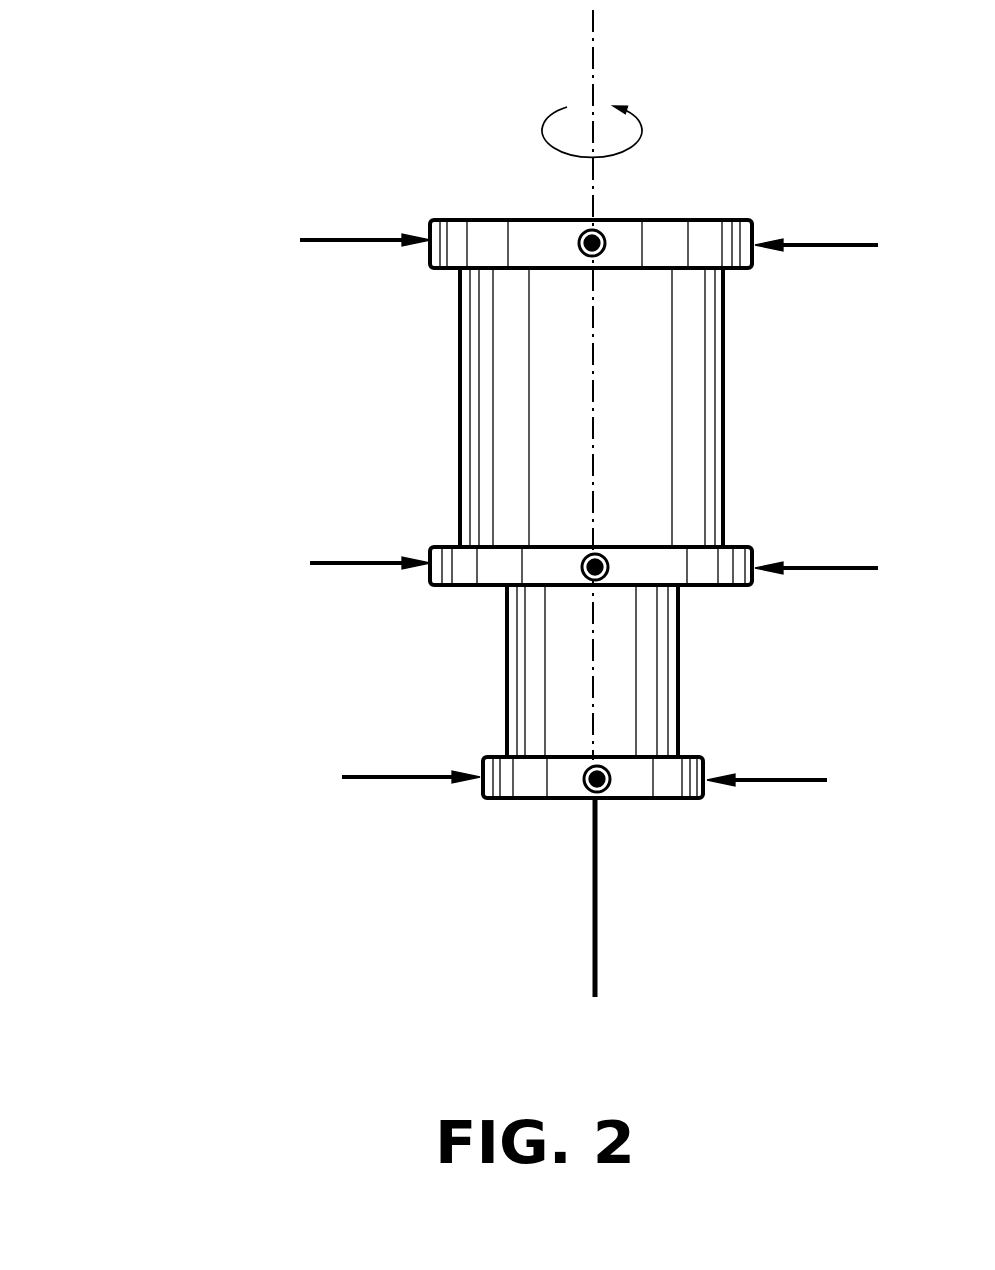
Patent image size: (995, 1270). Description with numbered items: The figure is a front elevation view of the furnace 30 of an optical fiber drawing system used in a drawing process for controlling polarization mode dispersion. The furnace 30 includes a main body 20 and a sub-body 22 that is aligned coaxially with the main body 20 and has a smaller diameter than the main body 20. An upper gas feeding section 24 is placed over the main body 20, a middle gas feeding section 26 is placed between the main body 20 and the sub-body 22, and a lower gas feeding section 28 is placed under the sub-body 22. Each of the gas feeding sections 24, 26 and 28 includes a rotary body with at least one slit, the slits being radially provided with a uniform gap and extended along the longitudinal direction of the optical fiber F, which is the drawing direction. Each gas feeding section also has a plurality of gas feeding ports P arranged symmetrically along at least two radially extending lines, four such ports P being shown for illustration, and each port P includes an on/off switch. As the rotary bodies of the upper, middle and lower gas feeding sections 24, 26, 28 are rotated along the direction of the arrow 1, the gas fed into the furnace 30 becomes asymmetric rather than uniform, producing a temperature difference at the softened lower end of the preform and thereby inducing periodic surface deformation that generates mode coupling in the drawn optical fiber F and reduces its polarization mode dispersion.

The arrow 1 is at (540, 128).
The furnace 30 is at (345, 418).
The upper gas feeding section 24 is at (633, 246).
The main body 20 is at (655, 430).
The middle gas feeding section 26 is at (700, 547).
The sub-body 22 is at (645, 688).
The lower gas feeding section 28 is at (661, 779).
The optical fiber F is at (597, 912).
The gas feeding ports P is at (755, 256).